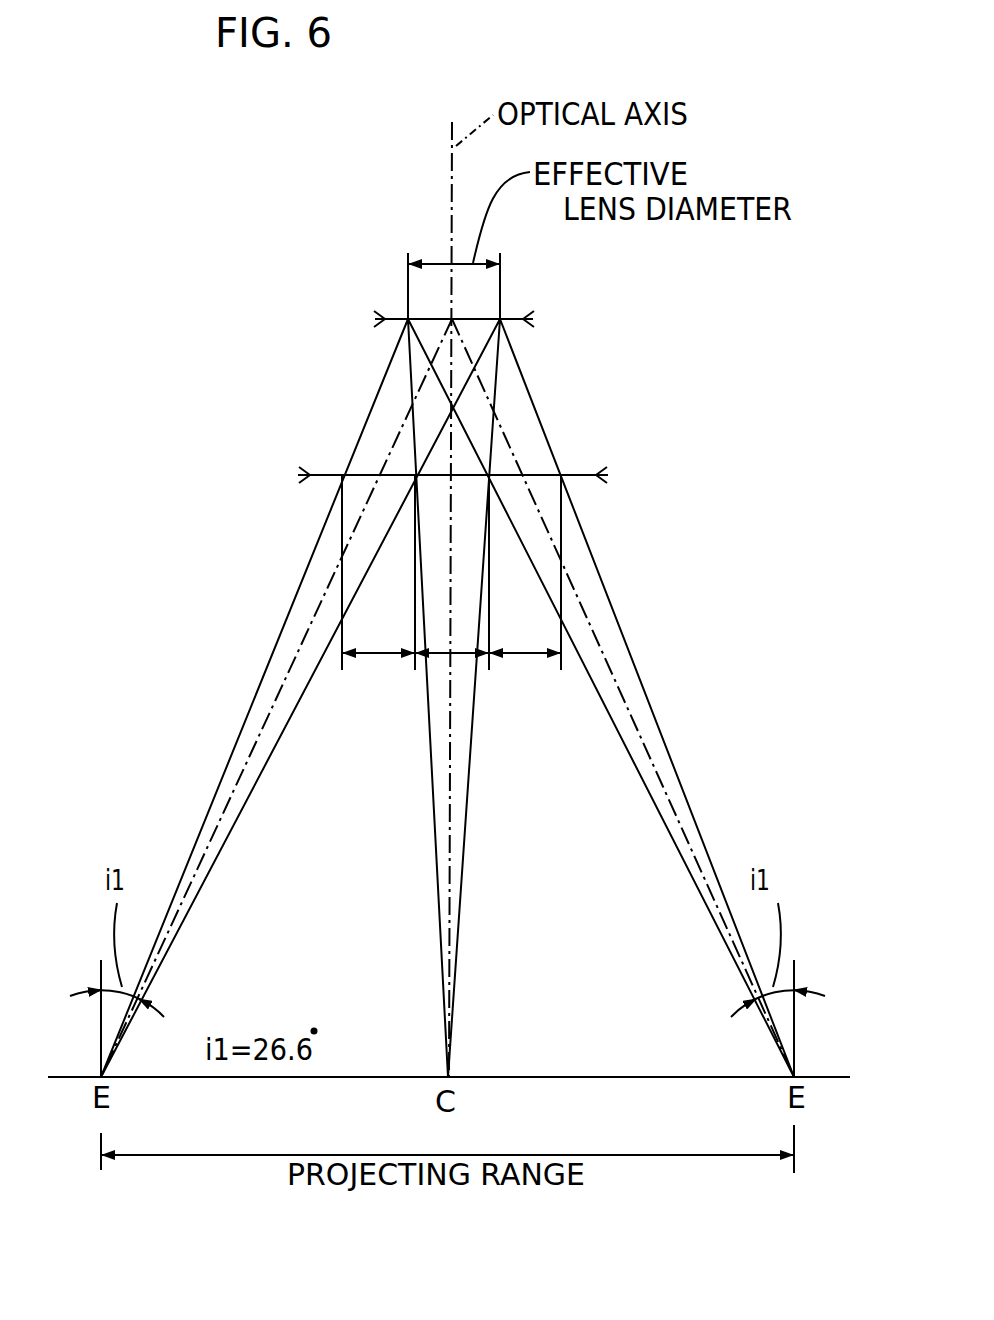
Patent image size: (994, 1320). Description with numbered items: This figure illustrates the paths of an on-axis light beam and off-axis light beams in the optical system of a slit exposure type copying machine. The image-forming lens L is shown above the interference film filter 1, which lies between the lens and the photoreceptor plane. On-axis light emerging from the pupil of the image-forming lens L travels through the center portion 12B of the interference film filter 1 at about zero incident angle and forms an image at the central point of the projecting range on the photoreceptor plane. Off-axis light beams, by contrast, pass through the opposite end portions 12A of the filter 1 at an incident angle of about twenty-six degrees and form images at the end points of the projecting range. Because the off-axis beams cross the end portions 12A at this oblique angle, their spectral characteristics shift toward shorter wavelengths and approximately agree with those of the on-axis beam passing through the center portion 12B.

The interference film filter 1 is at (325, 473).
The image-forming lens L is at (437, 316).
The end portions 12A is at (368, 657).
The center portion 12B is at (437, 670).